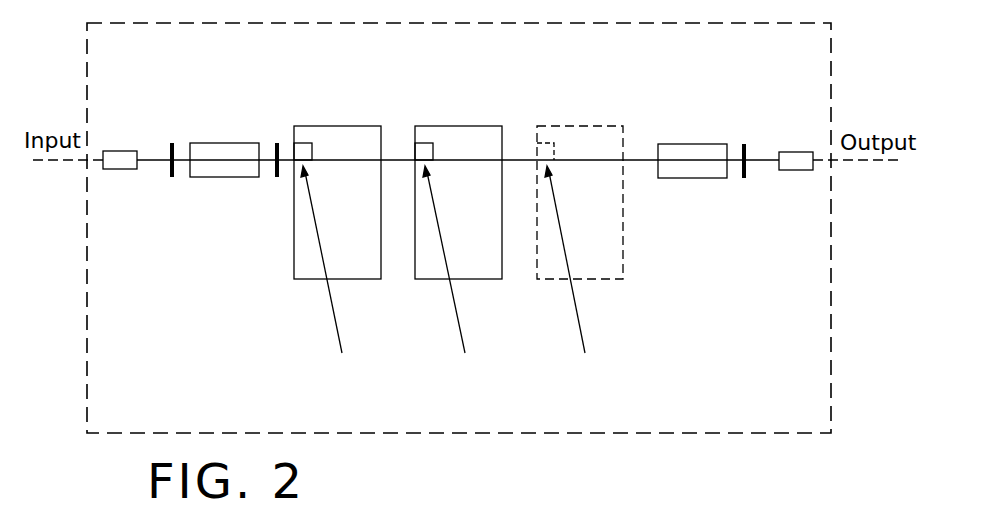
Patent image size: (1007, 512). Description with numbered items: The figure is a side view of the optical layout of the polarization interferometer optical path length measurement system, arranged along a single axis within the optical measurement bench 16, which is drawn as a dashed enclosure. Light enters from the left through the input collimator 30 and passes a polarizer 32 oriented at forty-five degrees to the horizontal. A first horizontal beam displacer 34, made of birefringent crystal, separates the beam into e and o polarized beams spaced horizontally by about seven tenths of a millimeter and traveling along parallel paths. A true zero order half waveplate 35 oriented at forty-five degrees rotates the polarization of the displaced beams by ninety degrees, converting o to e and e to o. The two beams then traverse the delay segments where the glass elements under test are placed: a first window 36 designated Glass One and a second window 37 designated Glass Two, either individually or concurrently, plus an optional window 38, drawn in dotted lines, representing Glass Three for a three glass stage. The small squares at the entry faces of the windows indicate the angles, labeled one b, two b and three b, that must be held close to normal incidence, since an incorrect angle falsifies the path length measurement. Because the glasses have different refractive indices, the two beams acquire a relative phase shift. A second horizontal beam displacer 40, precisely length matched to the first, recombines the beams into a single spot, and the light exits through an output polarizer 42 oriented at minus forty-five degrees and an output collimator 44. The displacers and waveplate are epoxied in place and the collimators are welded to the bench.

The optical measurement bench 16 is at (640, 433).
The input collimator 30 is at (118, 169).
The polarizer 32 is at (170, 145).
The first horizontal beam displacer 34 is at (218, 143).
The true zero order half waveplate 35 is at (277, 178).
The first window 36 is at (320, 126).
The second window 37 is at (446, 126).
The optional window 38 is at (562, 126).
The second horizontal beam displacer 40 is at (692, 144).
The output polarizer 42 is at (746, 170).
The output collimator 44 is at (797, 152).